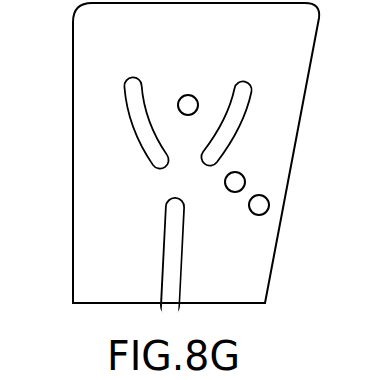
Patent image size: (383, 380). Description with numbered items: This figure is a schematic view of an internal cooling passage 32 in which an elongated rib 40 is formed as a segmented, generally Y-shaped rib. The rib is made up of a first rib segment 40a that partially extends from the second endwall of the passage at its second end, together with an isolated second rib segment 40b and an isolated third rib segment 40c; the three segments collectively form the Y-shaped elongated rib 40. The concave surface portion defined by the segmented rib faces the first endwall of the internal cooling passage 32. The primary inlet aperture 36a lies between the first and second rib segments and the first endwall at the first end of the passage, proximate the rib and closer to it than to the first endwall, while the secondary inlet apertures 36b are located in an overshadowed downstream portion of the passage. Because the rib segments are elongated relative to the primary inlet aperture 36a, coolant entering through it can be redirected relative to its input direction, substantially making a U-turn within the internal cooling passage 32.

The internal cooling passage 32 is at (270, 235).
The primary inlet aperture 36a is at (191, 95).
The secondary inlet apertures 36b is at (245, 178).
The elongated rib 40 is at (193, 184).
The first rib segment 40a is at (179, 270).
The second rib segment 40b is at (127, 97).
The third rib segment 40c is at (250, 85).